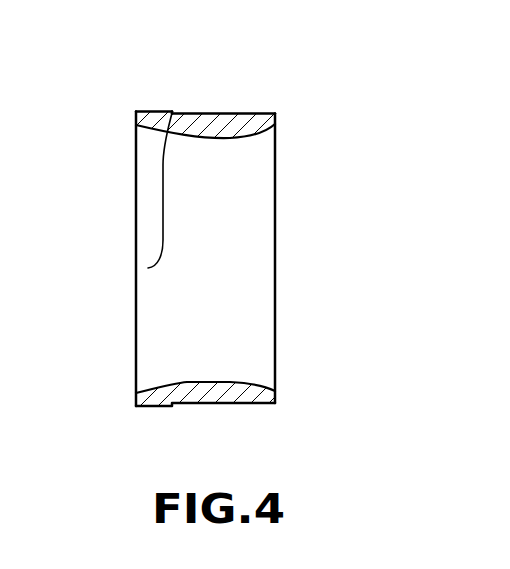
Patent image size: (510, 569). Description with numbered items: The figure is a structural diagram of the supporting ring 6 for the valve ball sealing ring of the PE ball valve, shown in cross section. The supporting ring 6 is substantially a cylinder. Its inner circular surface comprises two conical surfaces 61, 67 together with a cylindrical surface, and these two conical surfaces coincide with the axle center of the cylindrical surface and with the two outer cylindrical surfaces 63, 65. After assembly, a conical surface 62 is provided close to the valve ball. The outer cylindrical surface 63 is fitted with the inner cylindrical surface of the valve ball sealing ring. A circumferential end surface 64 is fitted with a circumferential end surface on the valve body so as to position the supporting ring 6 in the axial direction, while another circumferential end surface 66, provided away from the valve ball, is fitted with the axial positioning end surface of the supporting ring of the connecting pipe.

The supporting ring 6 is at (212, 392).
The conical surface 61 is at (243, 133).
The conical surface 62 is at (272, 128).
The outer cylindrical surface 63 is at (231, 113).
The circumferential end surface 64 is at (172, 113).
The outer cylindrical surface 65 is at (153, 111).
The circumferential end surface 66 is at (136, 174).
The conical surface 67 is at (148, 268).